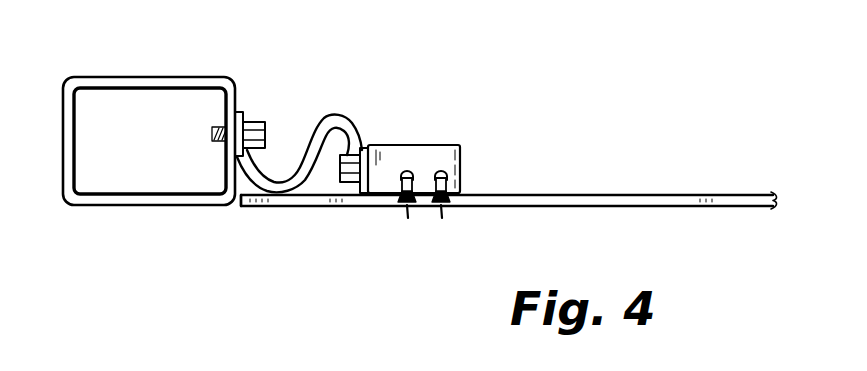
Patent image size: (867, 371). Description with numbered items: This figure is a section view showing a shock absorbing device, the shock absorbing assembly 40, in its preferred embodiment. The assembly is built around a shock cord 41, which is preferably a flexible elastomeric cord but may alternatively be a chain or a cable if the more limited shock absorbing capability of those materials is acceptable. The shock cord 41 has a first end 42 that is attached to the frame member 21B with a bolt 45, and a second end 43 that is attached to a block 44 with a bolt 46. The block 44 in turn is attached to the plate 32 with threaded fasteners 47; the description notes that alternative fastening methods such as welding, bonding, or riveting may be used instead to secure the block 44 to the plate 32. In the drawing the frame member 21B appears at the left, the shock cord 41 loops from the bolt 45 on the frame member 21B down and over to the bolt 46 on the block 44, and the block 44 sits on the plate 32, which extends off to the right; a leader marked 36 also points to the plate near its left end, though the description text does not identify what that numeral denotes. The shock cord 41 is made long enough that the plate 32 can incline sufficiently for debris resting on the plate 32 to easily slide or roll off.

The frame member 21B is at (142, 77).
The plate 32 is at (632, 195).
The rail end 36 is at (240, 208).
The shock absorbing assembly 40 is at (387, 88).
The shock cord 41 is at (345, 118).
The first end 42 is at (242, 113).
The second end 43 is at (363, 192).
The block 44 is at (421, 145).
The bolt 45 is at (266, 121).
The bolt 46 is at (340, 175).
The threaded fasteners 47 is at (409, 207).